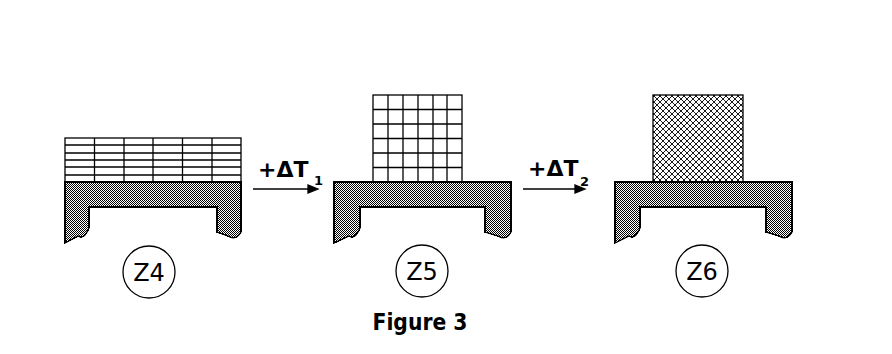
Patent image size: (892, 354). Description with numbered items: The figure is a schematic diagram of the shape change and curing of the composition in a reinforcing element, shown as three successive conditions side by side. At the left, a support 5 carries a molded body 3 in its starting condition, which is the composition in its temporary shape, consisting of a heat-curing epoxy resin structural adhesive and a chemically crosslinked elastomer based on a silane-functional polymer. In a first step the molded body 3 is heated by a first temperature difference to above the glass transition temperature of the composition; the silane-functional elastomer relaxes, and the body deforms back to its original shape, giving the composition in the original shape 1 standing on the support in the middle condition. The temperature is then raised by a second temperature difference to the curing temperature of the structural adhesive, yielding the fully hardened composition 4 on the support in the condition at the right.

The composition in the original shape 1 is at (408, 110).
The molded body 3 is at (136, 146).
The fully hardened composition 4 is at (700, 95).
The support 5 is at (172, 207).